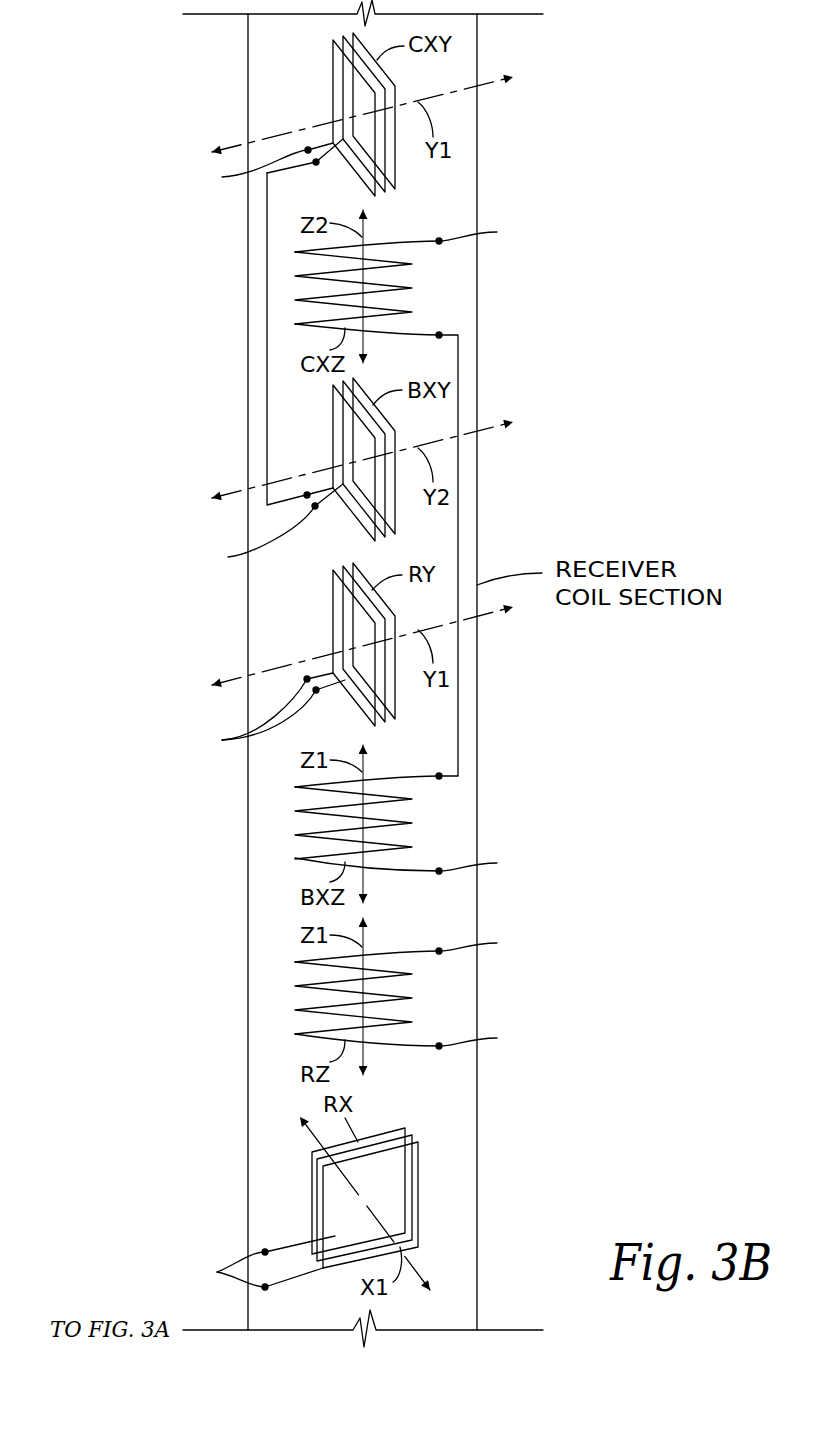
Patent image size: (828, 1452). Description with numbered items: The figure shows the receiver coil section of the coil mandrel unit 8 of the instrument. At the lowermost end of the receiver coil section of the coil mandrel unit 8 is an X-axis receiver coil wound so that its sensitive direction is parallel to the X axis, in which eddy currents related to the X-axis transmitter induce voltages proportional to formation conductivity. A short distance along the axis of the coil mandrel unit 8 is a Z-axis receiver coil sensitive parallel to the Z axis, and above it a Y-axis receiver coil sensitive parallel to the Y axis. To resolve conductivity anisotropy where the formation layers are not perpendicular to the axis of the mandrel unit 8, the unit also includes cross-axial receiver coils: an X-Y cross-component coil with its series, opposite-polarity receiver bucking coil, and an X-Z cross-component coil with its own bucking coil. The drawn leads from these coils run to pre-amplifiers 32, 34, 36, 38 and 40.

The coil mandrel unit 8 is at (553, 482).
The pre-amplifier 32 lead 32 is at (183, 1263).
The pre-amplifier 34 lead 34 is at (193, 713).
The pre-amplifier 36 lead 36 is at (495, 989).
The pre-amplifier 38 lead 38 is at (192, 354).
The pre-amplifier 40 lead 40 is at (495, 546).